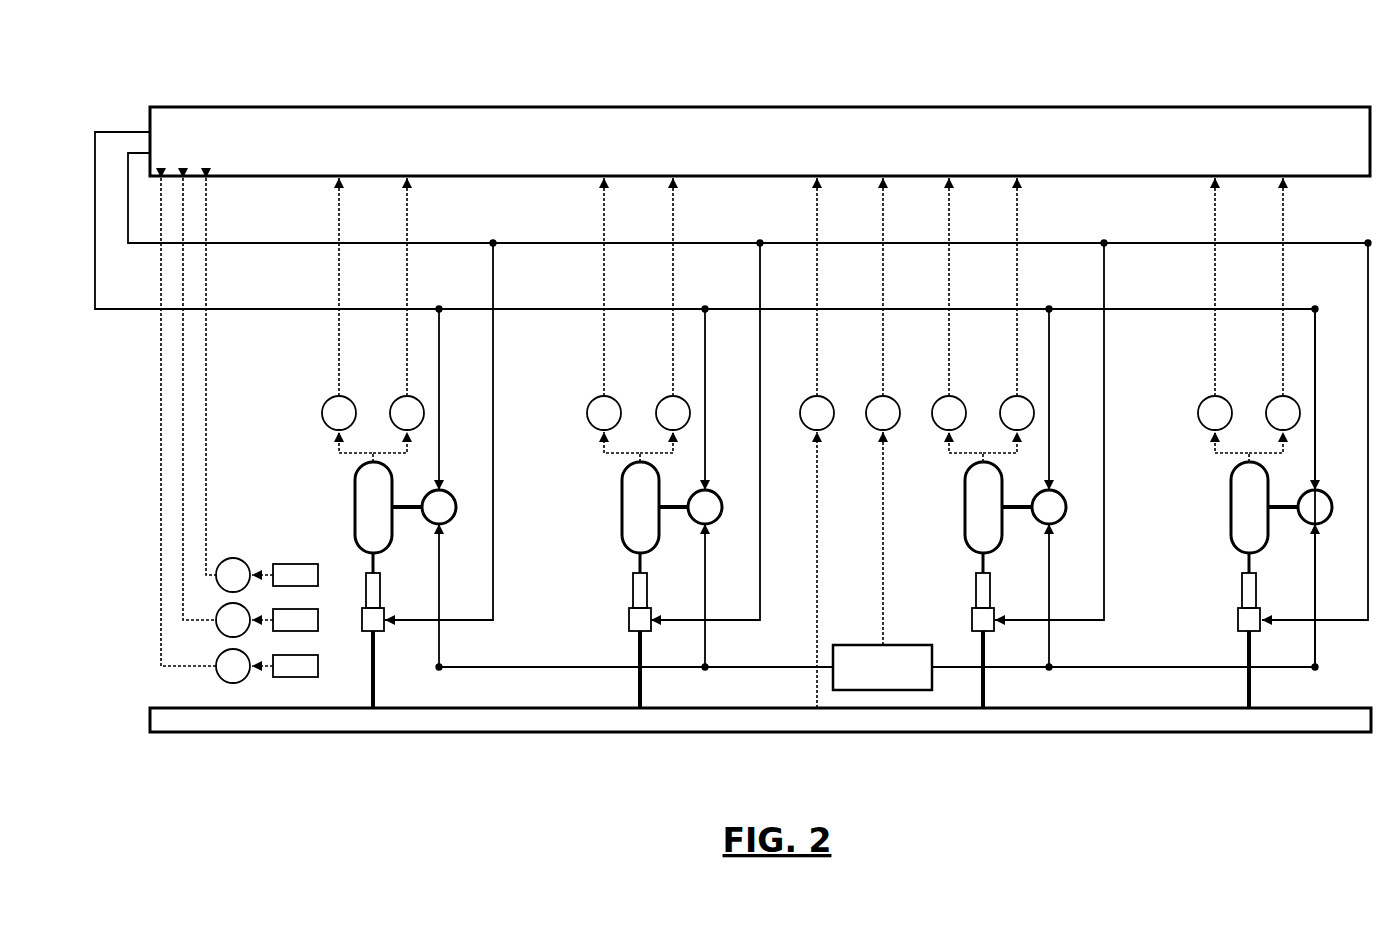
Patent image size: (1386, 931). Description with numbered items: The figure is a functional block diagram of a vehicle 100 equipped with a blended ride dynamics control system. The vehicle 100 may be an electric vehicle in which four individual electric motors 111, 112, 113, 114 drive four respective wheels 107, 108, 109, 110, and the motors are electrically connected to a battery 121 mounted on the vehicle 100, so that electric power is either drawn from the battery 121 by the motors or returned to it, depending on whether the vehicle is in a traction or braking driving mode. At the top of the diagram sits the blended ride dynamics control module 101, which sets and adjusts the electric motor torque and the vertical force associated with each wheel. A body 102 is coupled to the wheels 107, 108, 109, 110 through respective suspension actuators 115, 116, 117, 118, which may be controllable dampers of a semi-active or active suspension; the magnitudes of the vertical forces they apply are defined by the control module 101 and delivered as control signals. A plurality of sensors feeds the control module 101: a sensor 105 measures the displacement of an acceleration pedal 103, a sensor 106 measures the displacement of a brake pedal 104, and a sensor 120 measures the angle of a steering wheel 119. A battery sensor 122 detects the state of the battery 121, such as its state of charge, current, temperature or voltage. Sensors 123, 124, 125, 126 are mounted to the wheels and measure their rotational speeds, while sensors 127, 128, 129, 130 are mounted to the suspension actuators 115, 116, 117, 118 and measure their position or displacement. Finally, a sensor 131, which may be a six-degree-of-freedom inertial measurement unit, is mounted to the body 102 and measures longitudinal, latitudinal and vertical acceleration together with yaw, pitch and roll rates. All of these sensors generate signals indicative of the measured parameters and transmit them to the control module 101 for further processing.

The vehicle 100 is at (291, 59).
The blended ride dynamics control module 101 is at (760, 141).
The body 102 is at (760, 720).
The acceleration pedal 103 is at (285, 575).
The brake pedal 104 is at (285, 620).
The sensor 105 is at (228, 385).
The sensor 106 is at (216, 407).
The wheel 107 is at (373, 507).
The wheel 108 is at (640, 507).
The wheel 109 is at (983, 507).
The wheel 110 is at (1249, 507).
The electric motor 111 is at (457, 495).
The electric motor 112 is at (723, 495).
The electric motor 113 is at (1067, 495).
The electric motor 114 is at (1333, 495).
The suspension actuator 115 is at (385, 607).
The suspension actuator 116 is at (652, 607).
The suspension actuator 117 is at (995, 607).
The suspension actuator 118 is at (1261, 607).
The steering wheel 119 is at (285, 666).
The sensor 120 is at (205, 430).
The battery 121 is at (907, 643).
The battery sensor 122 is at (883, 411).
The sensor 123 is at (339, 304).
The sensor 124 is at (604, 304).
The sensor 125 is at (949, 304).
The sensor 126 is at (1215, 304).
The sensor 127 is at (407, 304).
The sensor 128 is at (673, 304).
The sensor 129 is at (1017, 304).
The sensor 130 is at (1283, 304).
The sensor 131 is at (817, 443).